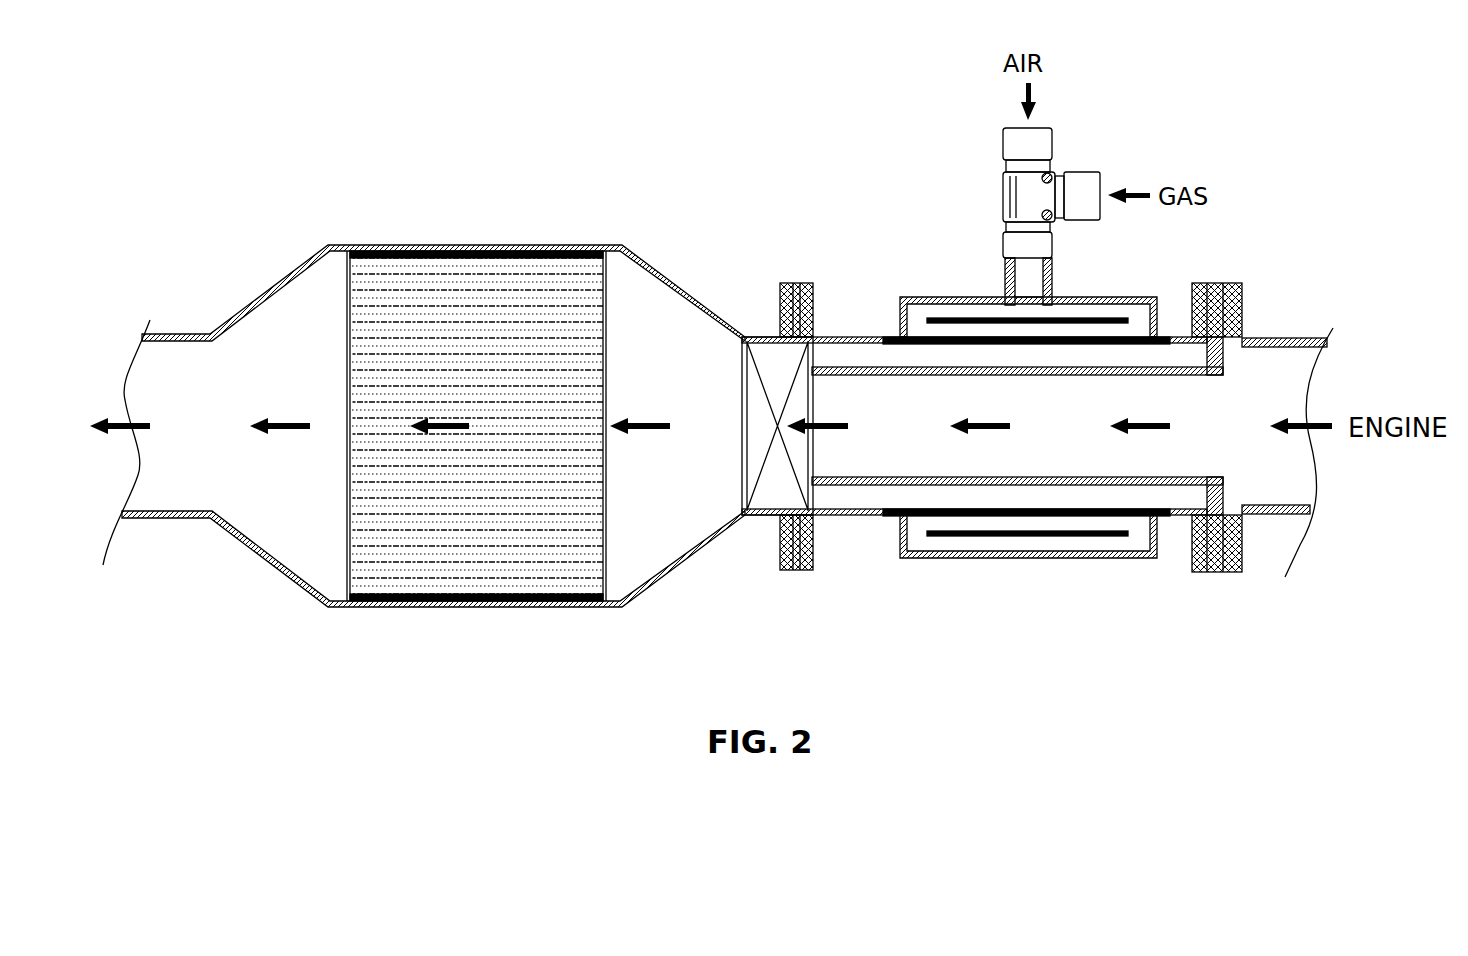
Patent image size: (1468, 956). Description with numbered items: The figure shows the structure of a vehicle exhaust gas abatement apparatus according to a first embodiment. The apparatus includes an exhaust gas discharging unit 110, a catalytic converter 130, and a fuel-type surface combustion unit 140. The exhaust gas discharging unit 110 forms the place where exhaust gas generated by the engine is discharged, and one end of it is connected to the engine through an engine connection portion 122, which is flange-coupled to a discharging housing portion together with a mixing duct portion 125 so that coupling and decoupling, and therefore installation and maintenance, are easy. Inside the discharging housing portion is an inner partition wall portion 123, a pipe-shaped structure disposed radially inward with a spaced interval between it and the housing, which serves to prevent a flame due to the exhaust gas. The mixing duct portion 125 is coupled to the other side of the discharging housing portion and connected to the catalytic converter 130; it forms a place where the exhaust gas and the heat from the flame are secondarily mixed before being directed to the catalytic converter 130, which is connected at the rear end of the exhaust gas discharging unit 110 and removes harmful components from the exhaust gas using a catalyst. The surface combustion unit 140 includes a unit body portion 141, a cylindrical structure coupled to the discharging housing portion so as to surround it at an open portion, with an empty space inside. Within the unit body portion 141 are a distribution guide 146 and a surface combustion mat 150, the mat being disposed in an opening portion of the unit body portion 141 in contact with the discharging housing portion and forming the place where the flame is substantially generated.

The exhaust gas discharging unit 110 is at (850, 322).
The engine connection portion 122 is at (1288, 338).
The inner partition wall portion 123 is at (858, 487).
The mixing duct portion 125 is at (742, 385).
The catalytic converter 130 is at (486, 600).
The surface combustion unit 140 is at (962, 280).
The unit body portion 141 is at (1127, 560).
The distribution guide 146 is at (1024, 537).
The surface combustion mat 150 is at (1059, 345).